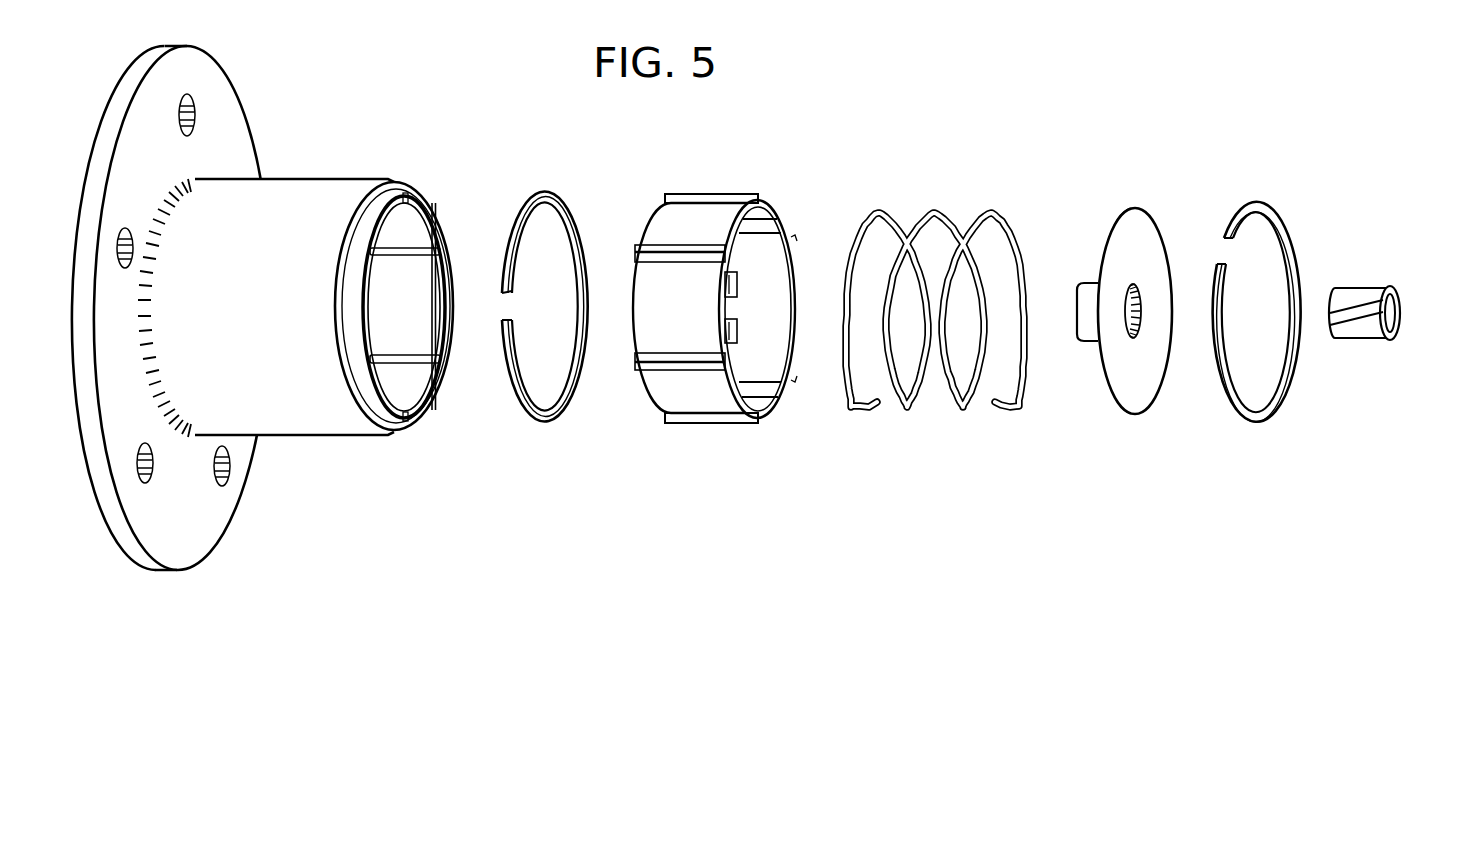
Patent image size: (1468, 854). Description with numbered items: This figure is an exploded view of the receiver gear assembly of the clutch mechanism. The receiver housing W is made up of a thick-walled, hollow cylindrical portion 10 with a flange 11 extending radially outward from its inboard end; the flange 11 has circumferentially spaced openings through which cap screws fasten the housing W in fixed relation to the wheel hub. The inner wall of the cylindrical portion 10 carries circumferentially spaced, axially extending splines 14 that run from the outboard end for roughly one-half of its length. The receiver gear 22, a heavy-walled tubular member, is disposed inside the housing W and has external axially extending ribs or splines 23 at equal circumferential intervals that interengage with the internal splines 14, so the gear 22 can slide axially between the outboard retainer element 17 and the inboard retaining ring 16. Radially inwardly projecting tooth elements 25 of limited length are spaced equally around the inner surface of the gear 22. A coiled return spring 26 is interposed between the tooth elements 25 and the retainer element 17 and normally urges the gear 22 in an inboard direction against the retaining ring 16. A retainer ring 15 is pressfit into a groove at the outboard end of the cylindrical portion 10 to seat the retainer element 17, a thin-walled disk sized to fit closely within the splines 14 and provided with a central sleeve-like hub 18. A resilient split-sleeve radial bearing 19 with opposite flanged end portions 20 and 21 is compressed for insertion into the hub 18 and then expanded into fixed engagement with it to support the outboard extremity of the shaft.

The cylindrical portion 10 is at (343, 181).
The flange 11 is at (235, 114).
The receiver housing W is at (296, 200).
The splines 14 is at (409, 362).
The retainer ring 15 is at (1250, 202).
The inboard retaining ring 16 is at (537, 192).
The retainer element 17 is at (1133, 208).
The hub 18 is at (1086, 283).
The bearing 19 is at (1365, 290).
The flanged end portion 20 is at (1332, 290).
The flanged end portion 21 is at (1395, 292).
The receiver gear 22 is at (644, 208).
The external splines 23 is at (725, 194).
The tooth elements 25 is at (736, 334).
The return spring 26 is at (950, 218).